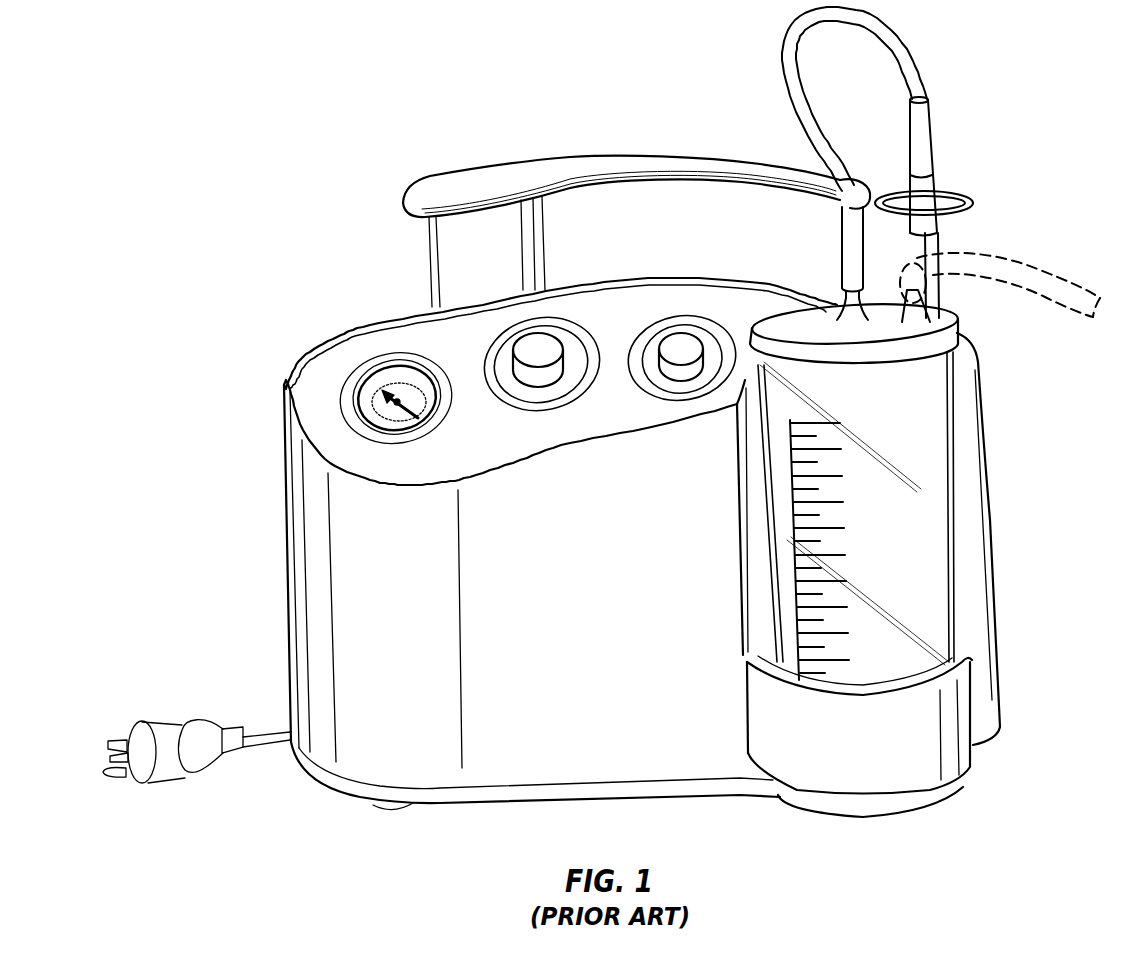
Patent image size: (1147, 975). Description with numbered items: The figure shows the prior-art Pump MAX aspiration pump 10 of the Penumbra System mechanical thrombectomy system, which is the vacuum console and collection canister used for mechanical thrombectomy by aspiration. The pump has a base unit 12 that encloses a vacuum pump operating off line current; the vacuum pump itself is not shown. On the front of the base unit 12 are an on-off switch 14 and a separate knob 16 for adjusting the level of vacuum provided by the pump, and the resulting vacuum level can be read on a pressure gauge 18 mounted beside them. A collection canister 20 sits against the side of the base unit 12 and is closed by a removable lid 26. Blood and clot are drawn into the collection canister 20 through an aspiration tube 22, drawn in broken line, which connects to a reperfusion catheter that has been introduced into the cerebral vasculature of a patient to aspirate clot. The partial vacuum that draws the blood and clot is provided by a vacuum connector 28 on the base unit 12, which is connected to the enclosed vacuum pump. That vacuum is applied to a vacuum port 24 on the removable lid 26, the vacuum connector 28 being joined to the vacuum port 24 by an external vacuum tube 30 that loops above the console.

The aspiration pump 10 is at (270, 162).
The base unit 12 is at (300, 538).
The on-off switch 14 is at (673, 330).
The knob 16 is at (550, 383).
The pressure gauge 18 is at (355, 395).
The collection canister 20 is at (940, 533).
The aspiration tube 22 is at (1018, 262).
The vacuum port 24 is at (840, 302).
The removable lid 26 is at (960, 332).
The vacuum connector 28 is at (937, 243).
The external vacuum tube 30 is at (910, 60).